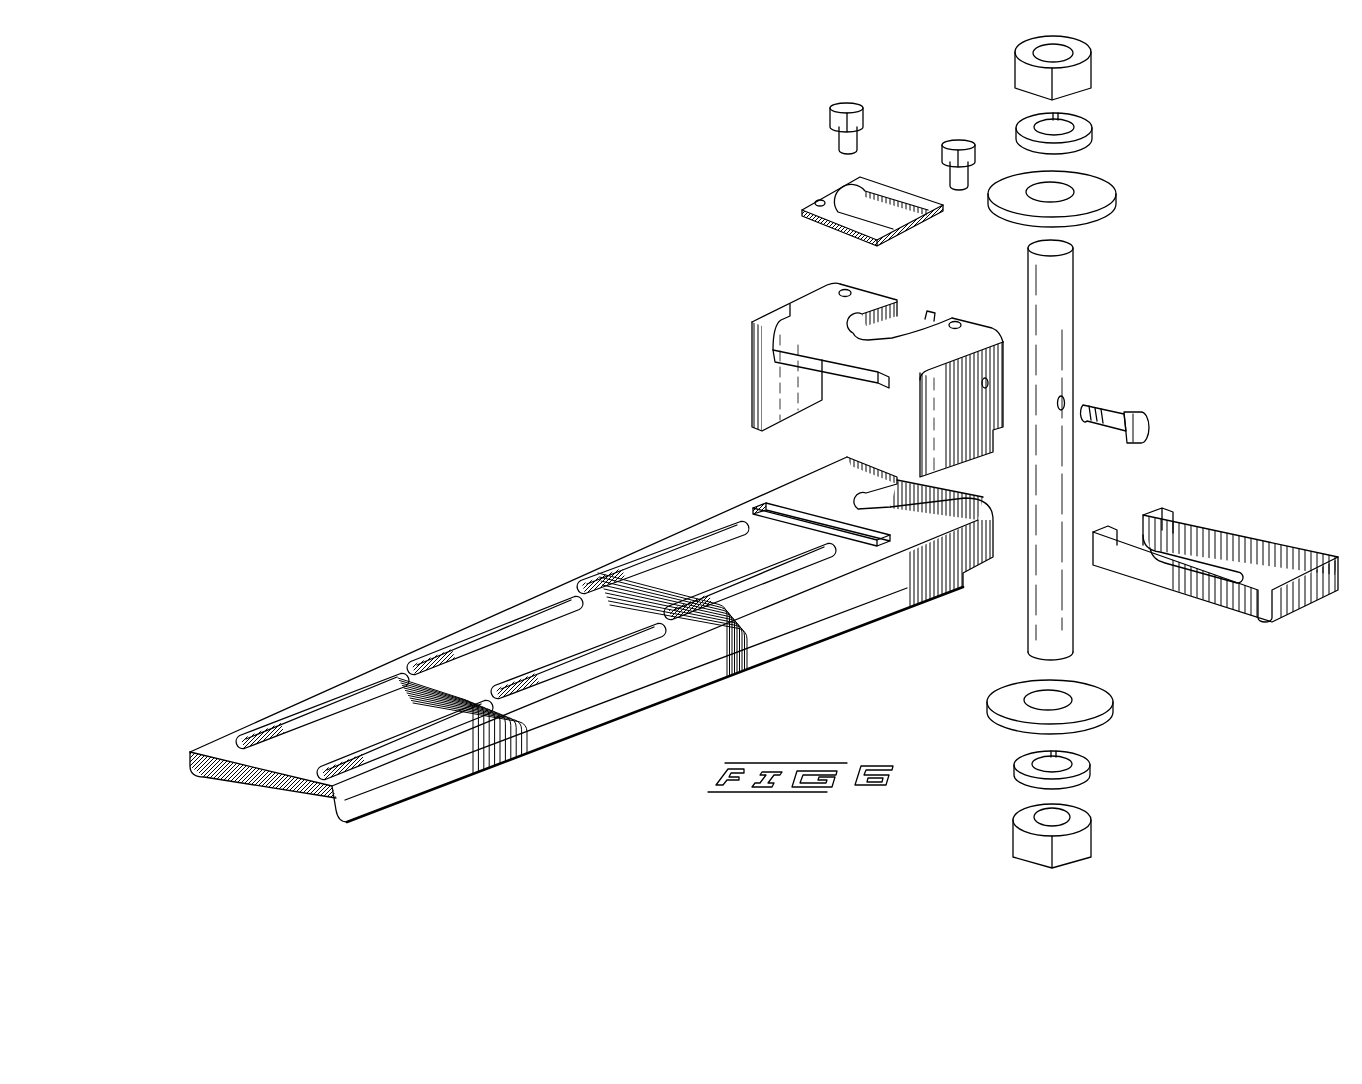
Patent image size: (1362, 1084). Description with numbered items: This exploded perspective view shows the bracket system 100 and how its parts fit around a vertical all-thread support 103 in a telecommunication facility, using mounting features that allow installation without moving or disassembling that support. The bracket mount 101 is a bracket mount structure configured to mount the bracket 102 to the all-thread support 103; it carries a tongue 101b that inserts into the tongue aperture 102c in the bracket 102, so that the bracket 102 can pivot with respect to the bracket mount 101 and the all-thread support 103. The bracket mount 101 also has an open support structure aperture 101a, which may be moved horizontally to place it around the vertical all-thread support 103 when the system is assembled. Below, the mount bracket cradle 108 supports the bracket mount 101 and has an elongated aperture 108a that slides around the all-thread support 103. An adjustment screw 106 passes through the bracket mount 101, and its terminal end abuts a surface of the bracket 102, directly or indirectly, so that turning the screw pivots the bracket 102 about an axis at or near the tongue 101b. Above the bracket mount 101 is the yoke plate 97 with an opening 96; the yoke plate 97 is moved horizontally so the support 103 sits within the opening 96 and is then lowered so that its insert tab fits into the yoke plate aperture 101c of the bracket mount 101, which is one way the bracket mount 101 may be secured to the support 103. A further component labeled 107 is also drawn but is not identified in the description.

The bracket system 100 is at (612, 516).
The bracket mount 101 is at (814, 281).
The open support structure aperture 101a is at (902, 311).
The bracket mount tongue 101b is at (858, 373).
The yoke plate aperture 101c is at (940, 312).
The bracket 102 is at (628, 625).
The tongue aperture 102c is at (787, 505).
The all-thread support 103 is at (1060, 295).
The adjustment screw 106 is at (960, 140).
The bolt 107 is at (1153, 432).
The mount bracket cradle 108 is at (1217, 590).
The elongated aperture 108a is at (1124, 524).
The opening 96 is at (900, 221).
The yoke plate 97 is at (822, 190).